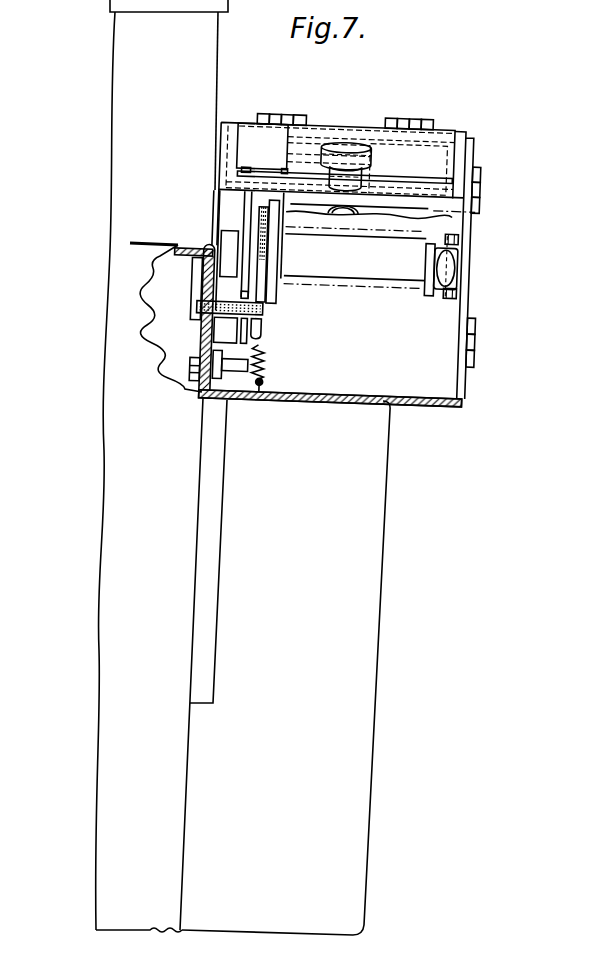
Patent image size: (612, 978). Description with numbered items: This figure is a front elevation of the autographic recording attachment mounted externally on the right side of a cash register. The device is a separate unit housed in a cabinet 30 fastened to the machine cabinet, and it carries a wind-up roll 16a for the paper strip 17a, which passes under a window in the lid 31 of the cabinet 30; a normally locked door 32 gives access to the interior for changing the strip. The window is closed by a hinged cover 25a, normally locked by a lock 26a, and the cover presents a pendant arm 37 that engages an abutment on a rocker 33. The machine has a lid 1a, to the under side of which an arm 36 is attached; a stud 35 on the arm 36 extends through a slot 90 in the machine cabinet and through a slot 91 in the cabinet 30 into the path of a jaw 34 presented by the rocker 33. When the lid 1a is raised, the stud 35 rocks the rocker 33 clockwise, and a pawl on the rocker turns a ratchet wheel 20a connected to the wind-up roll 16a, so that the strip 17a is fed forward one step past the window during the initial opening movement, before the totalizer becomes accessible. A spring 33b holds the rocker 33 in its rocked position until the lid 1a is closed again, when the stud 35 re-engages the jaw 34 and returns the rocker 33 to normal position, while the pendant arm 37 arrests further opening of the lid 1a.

The lid 1a is at (106, 605).
The wind-up roll 16a is at (418, 244).
The paper strip 17a is at (472, 203).
The ratchet wheel 20a is at (261, 281).
The hinged cover 25a is at (432, 135).
The lock 26a is at (339, 145).
The cabinet 30 is at (450, 295).
The lid of the cabinet 31 is at (216, 141).
The door 32 is at (467, 381).
The rocker 33 is at (266, 343).
The spring 33b is at (270, 378).
The jaw 34 is at (239, 289).
The stud 35 is at (263, 311).
The arm 36 is at (195, 308).
The pendant arm 37 is at (242, 220).
The slot 90 is at (206, 292).
The slot 91 is at (210, 251).